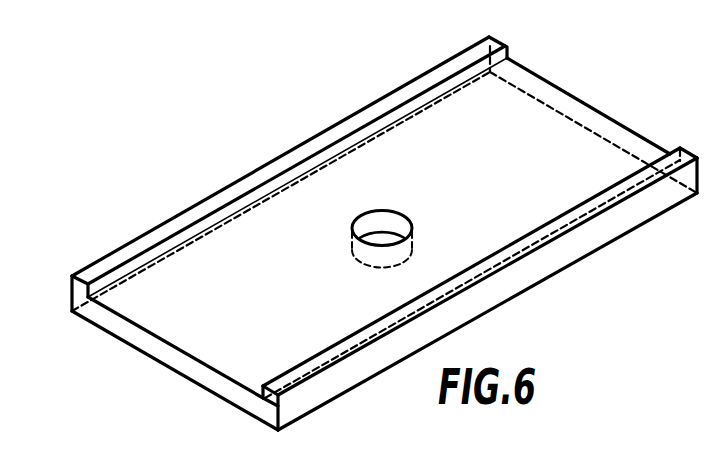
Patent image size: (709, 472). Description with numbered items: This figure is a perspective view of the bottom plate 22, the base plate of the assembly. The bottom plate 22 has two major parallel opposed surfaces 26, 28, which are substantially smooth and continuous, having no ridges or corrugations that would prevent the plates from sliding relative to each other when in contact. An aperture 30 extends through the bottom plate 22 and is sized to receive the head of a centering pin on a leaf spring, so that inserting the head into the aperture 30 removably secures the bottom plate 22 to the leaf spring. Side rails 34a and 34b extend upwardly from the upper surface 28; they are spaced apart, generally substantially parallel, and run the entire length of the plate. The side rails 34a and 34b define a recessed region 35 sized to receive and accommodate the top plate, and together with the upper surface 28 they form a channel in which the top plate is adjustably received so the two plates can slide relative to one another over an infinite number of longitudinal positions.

The bottom plate 22 is at (370, 222).
The major surface 26 is at (371, 311).
The upper surface 28 is at (590, 102).
The aperture 30 is at (529, 181).
The side rail 34a is at (271, 167).
The side rail 34b is at (480, 277).
The recessed region 35 is at (155, 347).